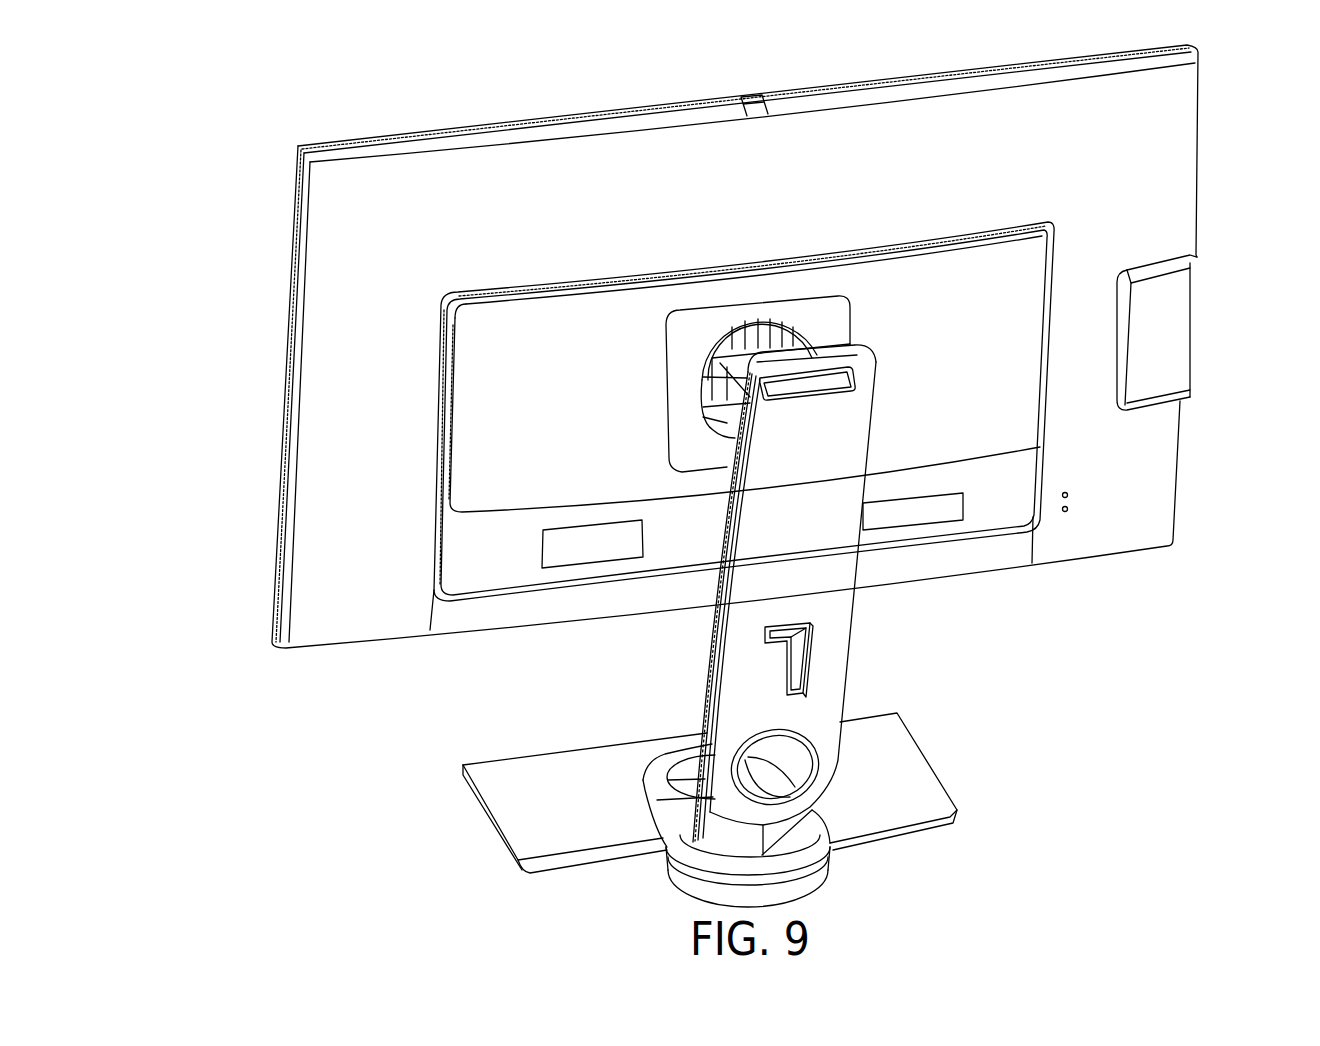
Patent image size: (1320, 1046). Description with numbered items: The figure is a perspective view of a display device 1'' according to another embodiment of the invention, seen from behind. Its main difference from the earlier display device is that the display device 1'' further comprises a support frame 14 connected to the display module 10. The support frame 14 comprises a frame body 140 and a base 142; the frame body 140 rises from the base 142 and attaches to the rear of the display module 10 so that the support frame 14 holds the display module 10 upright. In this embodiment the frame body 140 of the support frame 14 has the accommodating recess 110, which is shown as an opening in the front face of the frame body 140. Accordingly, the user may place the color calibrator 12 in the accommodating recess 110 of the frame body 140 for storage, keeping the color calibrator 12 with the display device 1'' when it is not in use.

The display device 1'' is at (702, 472).
The display module 10 is at (1197, 148).
The color calibrator 12 is at (800, 687).
The support frame 14 is at (561, 638).
The accommodating recess 110 is at (810, 649).
The frame body 140 is at (712, 667).
The base 142 is at (647, 740).